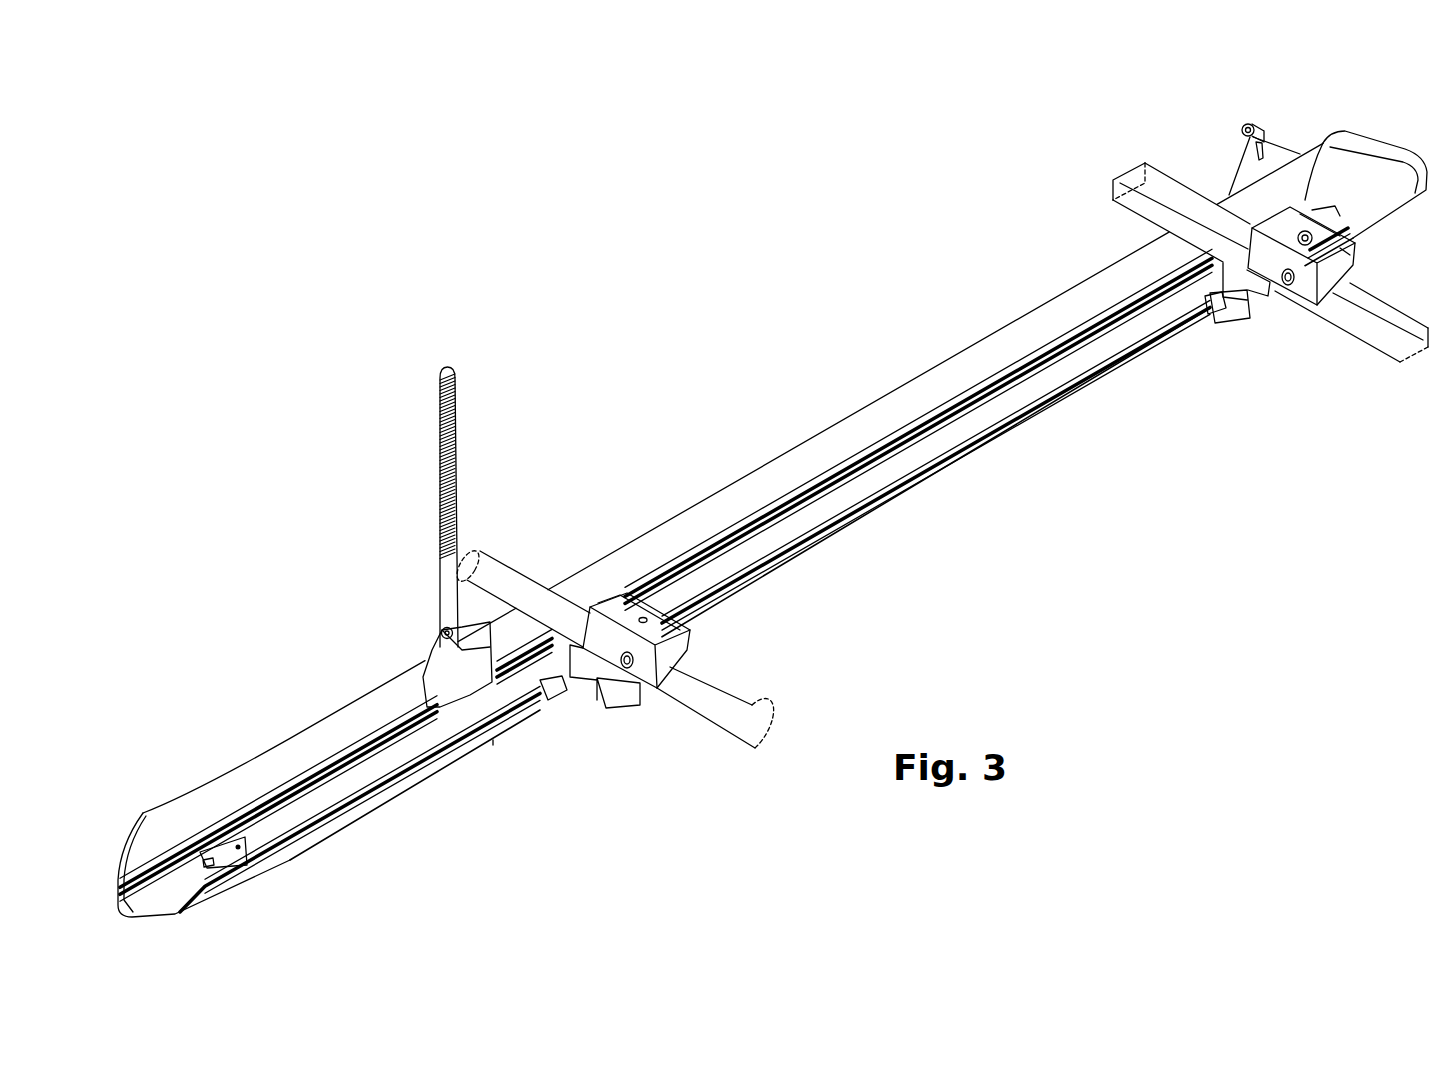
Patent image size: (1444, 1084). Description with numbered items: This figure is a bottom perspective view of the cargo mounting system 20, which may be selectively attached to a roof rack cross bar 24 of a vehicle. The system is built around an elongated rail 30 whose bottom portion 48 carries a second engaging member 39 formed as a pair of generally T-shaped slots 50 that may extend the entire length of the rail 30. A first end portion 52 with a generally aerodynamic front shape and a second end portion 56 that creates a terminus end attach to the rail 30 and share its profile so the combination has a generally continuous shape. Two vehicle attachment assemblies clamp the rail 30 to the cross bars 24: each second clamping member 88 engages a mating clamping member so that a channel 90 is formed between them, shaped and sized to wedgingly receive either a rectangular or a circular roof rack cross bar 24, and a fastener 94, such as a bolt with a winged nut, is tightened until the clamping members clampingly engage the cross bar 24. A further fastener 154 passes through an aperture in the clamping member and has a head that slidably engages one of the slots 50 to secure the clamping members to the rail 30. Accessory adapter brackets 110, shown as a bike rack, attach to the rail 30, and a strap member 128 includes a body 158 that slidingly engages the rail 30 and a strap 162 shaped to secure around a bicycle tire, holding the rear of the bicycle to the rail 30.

The cargo mounting system 20 is at (1023, 511).
The roof rack cross bar 24 is at (733, 721).
The rail 30 is at (668, 533).
The second engaging member 39 is at (921, 509).
The second portion of the rail 48 is at (1062, 373).
The generally T-shaped slots 50 is at (852, 466).
The first end portion 52 is at (1307, 197).
The second end portion 56 is at (147, 838).
The second clamping member 88 is at (675, 647).
The channel 90 is at (598, 607).
The fastener 94 is at (566, 724).
The accessory adapter bracket 110 is at (1243, 103).
The strap member 128 is at (493, 756).
The fastener 154 is at (1361, 263).
The body 158 is at (447, 698).
The strap 162 is at (457, 382).